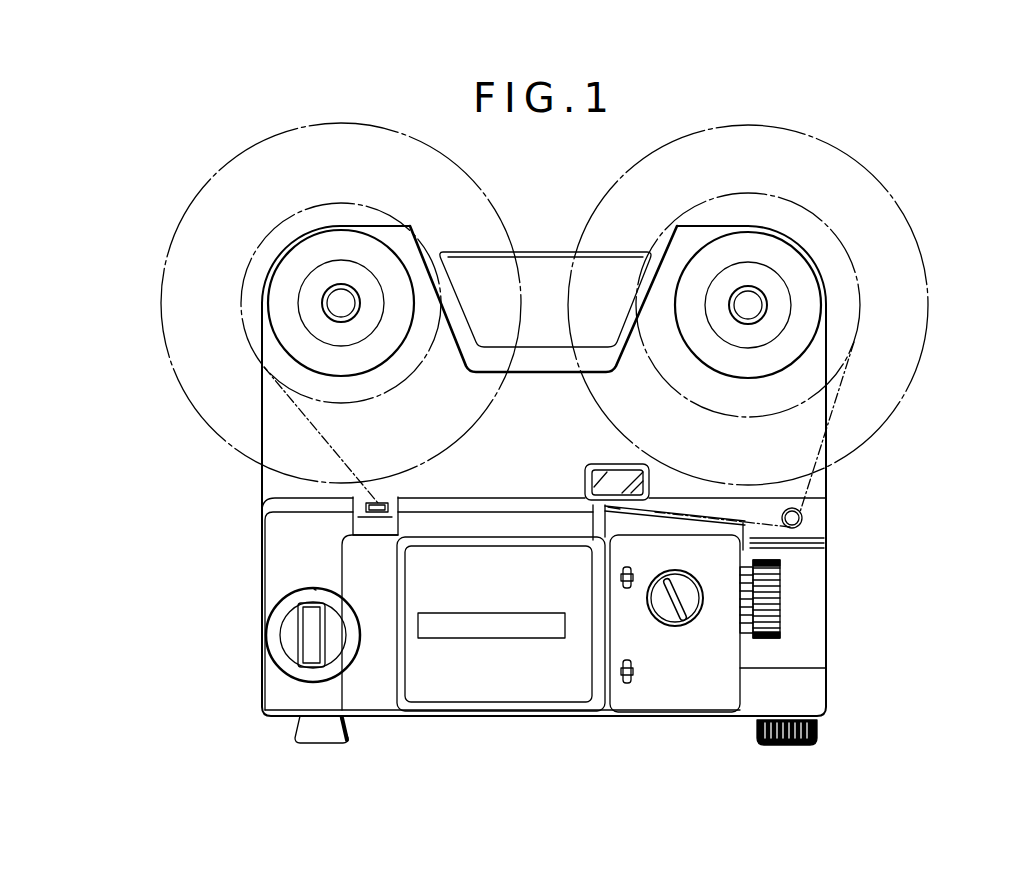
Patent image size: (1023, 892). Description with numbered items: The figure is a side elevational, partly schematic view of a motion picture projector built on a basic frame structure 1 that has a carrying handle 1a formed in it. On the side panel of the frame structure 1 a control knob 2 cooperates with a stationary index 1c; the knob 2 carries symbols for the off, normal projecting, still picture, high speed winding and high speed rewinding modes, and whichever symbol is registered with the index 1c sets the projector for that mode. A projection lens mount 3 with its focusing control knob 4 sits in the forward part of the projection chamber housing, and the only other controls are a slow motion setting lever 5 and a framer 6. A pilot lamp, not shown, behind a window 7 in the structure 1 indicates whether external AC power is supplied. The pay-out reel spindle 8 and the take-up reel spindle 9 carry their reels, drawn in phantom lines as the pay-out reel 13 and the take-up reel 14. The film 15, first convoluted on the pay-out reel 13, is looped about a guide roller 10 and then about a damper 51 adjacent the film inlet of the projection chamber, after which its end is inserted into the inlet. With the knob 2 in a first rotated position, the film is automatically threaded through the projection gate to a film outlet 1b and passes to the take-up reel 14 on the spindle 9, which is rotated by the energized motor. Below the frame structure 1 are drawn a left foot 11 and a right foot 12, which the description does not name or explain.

The frame structure 1 is at (812, 428).
The carrying handle 1a is at (545, 235).
The film outlet 1b is at (400, 506).
The stationary index 1c is at (309, 583).
The control knob 2 is at (297, 642).
The projection lens mount 3 is at (782, 598).
The focusing control knob 4 is at (676, 626).
The slow motion setting lever 5 is at (634, 572).
The framer 6 is at (634, 672).
The window 7 is at (641, 483).
The pay-out reel spindle 8 is at (745, 305).
The take-up reel spindle 9 is at (338, 303).
The guide roller 10 is at (802, 518).
The foot 11 is at (350, 738).
The foot 12 is at (819, 726).
The pay-out reel 13 is at (915, 272).
The take-up reel 14 is at (468, 187).
The film 15 is at (826, 485).
The damper 51 is at (610, 507).